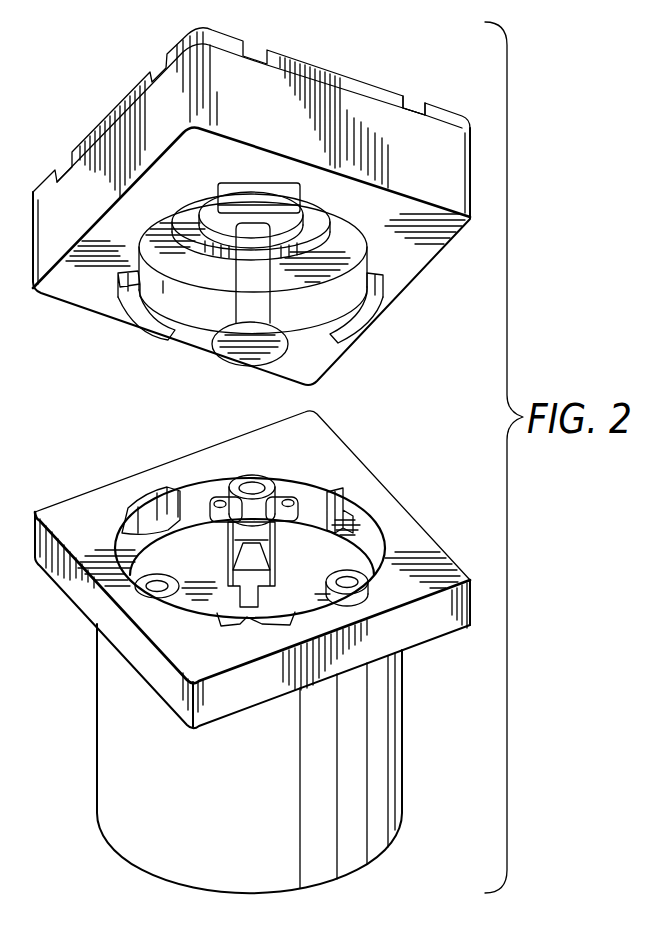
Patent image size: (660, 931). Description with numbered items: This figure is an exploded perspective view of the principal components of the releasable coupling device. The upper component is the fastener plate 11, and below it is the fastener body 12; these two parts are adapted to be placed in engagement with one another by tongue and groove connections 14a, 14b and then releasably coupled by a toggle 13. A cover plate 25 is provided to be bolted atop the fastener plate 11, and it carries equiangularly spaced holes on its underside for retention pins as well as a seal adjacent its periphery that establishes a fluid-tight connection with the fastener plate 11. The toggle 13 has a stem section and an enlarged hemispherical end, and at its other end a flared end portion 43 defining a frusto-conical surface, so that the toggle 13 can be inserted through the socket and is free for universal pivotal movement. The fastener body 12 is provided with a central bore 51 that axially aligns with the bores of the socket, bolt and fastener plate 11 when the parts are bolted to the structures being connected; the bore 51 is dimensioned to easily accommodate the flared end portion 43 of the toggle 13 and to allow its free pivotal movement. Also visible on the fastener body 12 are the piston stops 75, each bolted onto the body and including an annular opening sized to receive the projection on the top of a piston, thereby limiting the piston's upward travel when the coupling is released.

The fastener plate 11 is at (269, 206).
The fastener body 12 is at (402, 742).
The toggle 13 is at (236, 275).
The tongue and groove connections 14a is at (266, 193).
The tongue and groove connections 14b is at (133, 511).
The cover plate 25 is at (387, 92).
The flared end portion 43 is at (250, 358).
The central bore 51 is at (367, 548).
The piston stop 75 is at (230, 466).